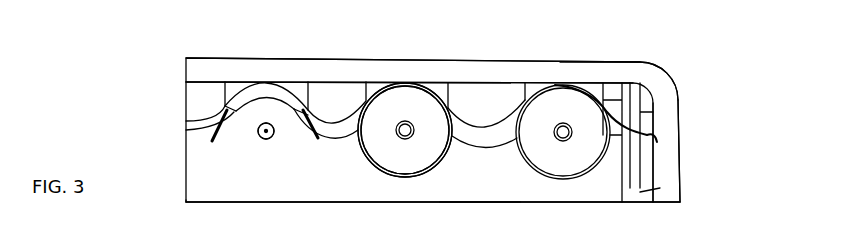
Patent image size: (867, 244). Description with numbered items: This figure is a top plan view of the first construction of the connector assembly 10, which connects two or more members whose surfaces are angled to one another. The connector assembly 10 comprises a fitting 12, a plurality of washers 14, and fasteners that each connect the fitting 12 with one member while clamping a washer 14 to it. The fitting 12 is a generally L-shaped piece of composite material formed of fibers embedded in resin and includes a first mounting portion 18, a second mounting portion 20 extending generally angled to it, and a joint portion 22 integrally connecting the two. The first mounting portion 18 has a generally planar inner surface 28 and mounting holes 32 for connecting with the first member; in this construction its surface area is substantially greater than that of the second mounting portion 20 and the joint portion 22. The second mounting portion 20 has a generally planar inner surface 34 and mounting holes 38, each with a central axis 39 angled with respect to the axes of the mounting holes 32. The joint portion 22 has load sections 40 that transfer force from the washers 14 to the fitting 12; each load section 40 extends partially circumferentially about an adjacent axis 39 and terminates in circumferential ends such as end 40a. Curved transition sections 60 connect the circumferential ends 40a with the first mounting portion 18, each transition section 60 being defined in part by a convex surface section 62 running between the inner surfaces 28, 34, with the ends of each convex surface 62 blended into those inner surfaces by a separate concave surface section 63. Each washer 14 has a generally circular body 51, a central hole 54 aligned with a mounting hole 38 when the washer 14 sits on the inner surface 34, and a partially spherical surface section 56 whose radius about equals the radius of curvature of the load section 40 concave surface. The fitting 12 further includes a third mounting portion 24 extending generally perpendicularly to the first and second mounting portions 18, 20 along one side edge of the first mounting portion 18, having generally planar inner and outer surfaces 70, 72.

The connector assembly 10 is at (118, 91).
The fitting 12 is at (700, 82).
The washer 14 is at (413, 86).
The first mounting portion 18 is at (308, 50).
The second mounting portion 20 is at (346, 212).
The joint portion 22 is at (346, 83).
The third mounting portion 24 is at (687, 147).
The inner surface of first mounting portion 28 is at (483, 88).
The mounting hole 32 is at (587, 62).
The inner surface of second mounting portion 34 is at (478, 193).
The mounting hole 38 is at (259, 137).
The central axis 39 is at (273, 134).
The load section 40 is at (263, 92).
The circumferential end 40a is at (272, 138).
The circular body 51 is at (405, 178).
The central hole 54 is at (411, 123).
The partially spherical surface section 56 is at (416, 179).
The curved transition section 60 is at (340, 110).
The convex surface section 62 is at (200, 95).
The concave surface section 63 is at (193, 131).
The inner surface of third mounting portion 70 is at (640, 193).
The outer surface of third mounting portion 72 is at (677, 123).